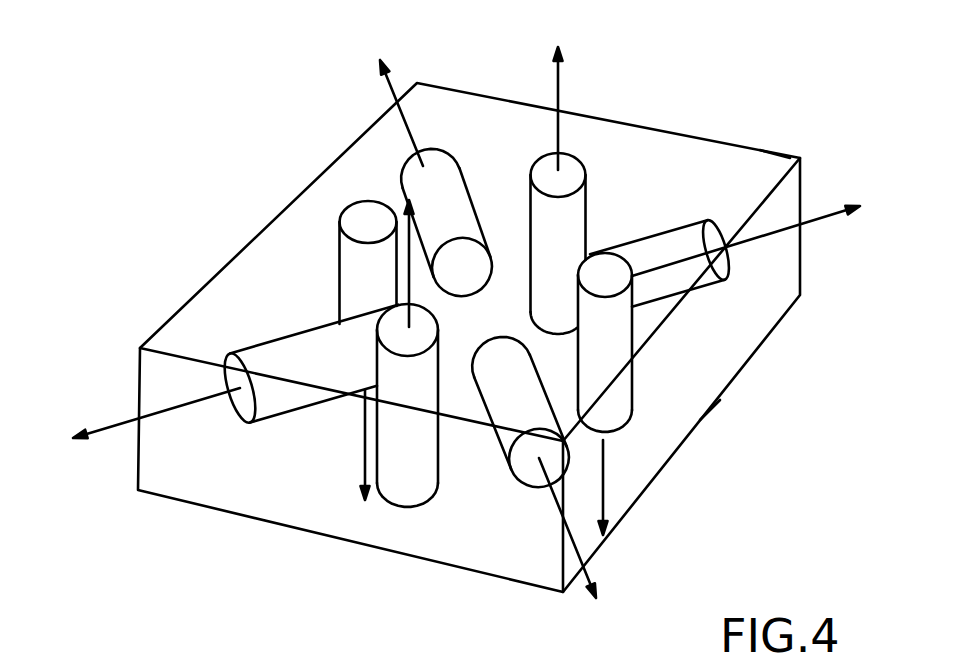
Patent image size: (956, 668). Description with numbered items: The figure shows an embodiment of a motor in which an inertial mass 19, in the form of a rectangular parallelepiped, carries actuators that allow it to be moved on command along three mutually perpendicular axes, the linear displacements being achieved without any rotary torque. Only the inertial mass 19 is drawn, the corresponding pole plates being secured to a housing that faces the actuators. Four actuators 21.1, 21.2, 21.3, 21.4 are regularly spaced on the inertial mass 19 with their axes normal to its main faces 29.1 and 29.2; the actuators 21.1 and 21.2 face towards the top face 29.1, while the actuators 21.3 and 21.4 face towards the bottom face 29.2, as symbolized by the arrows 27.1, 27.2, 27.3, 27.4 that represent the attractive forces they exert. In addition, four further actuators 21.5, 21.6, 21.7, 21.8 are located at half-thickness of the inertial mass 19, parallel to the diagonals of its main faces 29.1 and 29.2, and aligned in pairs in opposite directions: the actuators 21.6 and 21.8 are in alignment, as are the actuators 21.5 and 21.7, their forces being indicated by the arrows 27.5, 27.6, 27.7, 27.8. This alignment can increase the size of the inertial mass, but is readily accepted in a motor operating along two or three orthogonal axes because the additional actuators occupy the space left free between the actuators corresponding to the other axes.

The inertial mass 19 is at (633, 505).
The actuator 21.1 is at (377, 452).
The actuator 21.2 is at (583, 207).
The actuator 21.3 is at (633, 333).
The actuator 21.4 is at (340, 260).
The actuator 21.5 is at (662, 235).
The actuator 21.6 is at (405, 190).
The actuator 21.7 is at (270, 343).
The actuator 21.8 is at (500, 455).
The arrow 27.1 is at (409, 273).
The arrow 27.2 is at (556, 90).
The arrow 27.3 is at (603, 452).
The arrow 27.4 is at (365, 420).
The arrow 27.5 is at (827, 217).
The arrow 27.6 is at (400, 98).
The arrow 27.7 is at (113, 425).
The arrow 27.8 is at (557, 505).
The top main face 29.1 is at (747, 163).
The bottom main face 29.2 is at (713, 410).